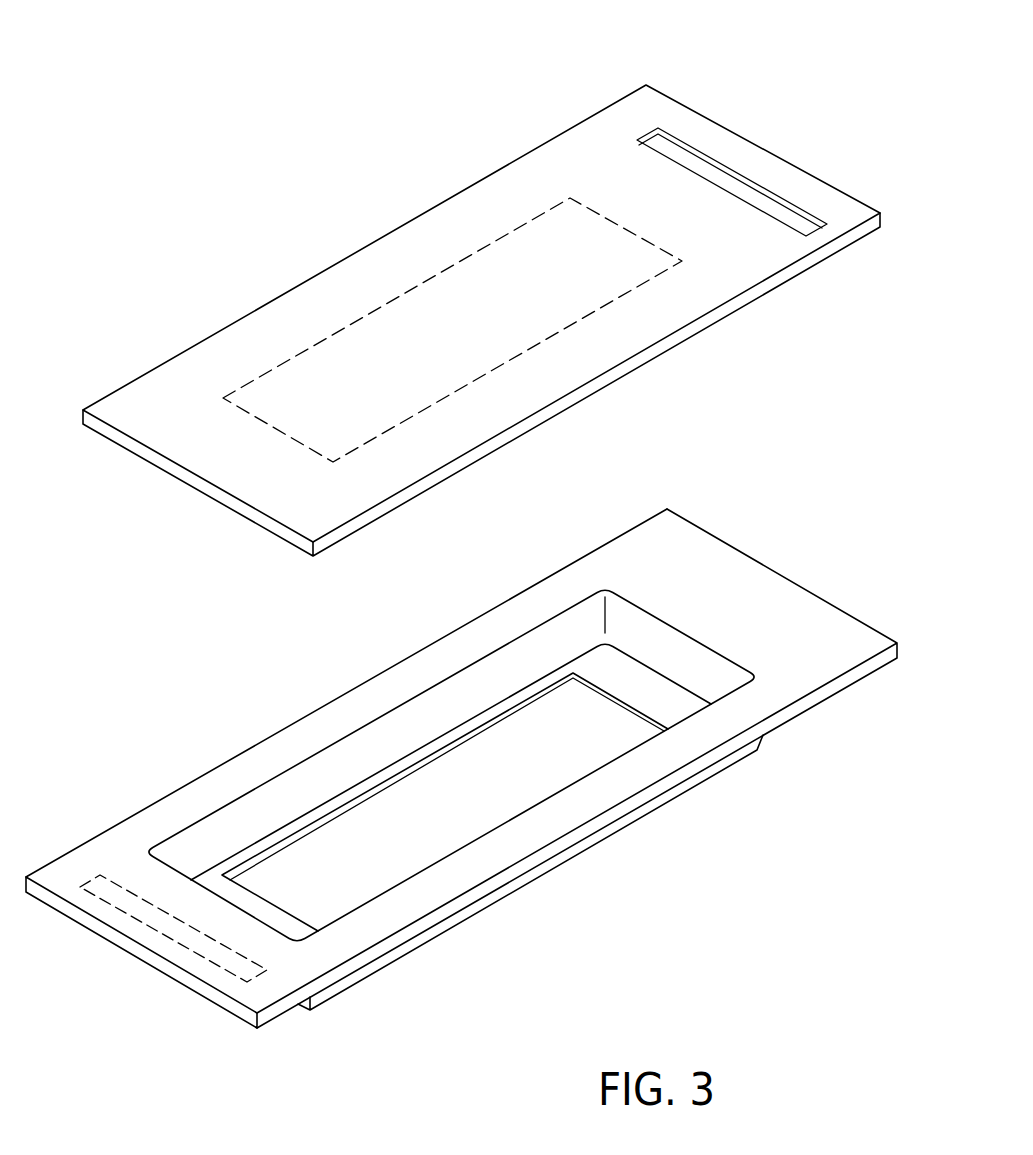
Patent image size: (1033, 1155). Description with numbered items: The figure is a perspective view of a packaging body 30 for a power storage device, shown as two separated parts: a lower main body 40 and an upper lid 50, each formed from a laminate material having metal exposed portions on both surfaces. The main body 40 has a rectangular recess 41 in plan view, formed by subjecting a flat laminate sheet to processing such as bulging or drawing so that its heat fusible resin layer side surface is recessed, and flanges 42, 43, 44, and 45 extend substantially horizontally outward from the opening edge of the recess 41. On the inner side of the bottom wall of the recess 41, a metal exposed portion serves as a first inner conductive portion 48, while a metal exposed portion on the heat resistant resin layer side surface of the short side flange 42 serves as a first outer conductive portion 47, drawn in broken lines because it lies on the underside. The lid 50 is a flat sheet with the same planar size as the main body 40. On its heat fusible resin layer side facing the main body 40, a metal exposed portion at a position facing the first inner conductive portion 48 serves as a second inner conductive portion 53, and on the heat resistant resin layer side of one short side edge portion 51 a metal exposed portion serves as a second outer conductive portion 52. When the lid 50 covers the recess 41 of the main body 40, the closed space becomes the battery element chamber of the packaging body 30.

The packaging body 30 is at (830, 79).
The lid 50 is at (508, 163).
The short side edge portion 51 is at (623, 122).
The second outer conductive portion 52 is at (692, 163).
The second inner conductive portion 53 is at (388, 290).
The main body 40 is at (640, 585).
The recess 41 is at (658, 647).
The flange 44 is at (772, 637).
The flange 45 is at (473, 638).
The short side flange 42 is at (142, 877).
The first outer conductive portion 47 is at (180, 932).
The flange 43 is at (597, 797).
The first inner conductive portion 48 is at (445, 827).